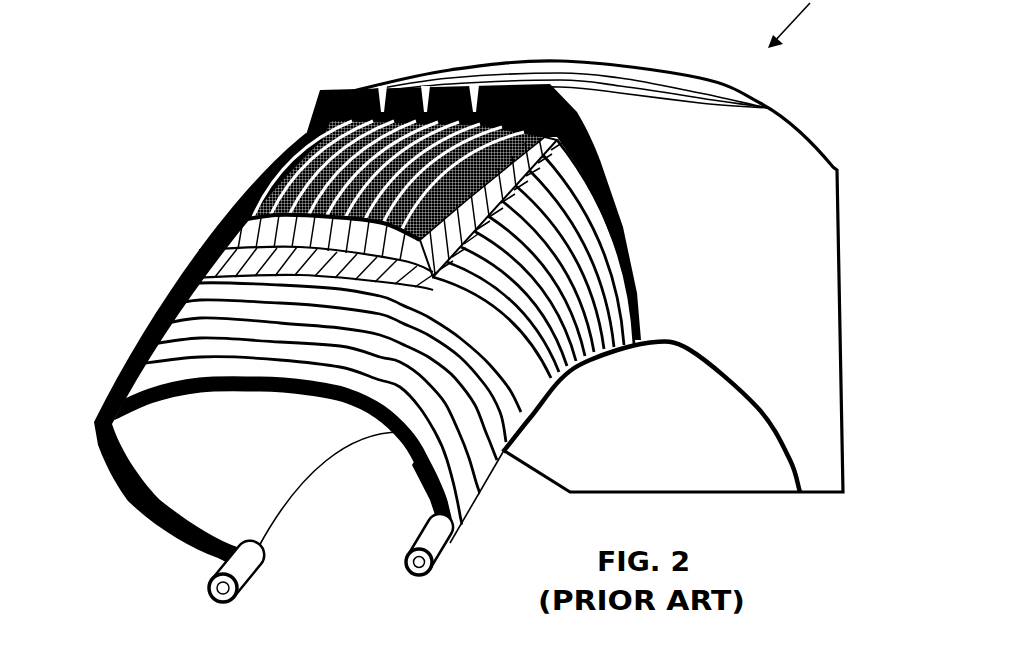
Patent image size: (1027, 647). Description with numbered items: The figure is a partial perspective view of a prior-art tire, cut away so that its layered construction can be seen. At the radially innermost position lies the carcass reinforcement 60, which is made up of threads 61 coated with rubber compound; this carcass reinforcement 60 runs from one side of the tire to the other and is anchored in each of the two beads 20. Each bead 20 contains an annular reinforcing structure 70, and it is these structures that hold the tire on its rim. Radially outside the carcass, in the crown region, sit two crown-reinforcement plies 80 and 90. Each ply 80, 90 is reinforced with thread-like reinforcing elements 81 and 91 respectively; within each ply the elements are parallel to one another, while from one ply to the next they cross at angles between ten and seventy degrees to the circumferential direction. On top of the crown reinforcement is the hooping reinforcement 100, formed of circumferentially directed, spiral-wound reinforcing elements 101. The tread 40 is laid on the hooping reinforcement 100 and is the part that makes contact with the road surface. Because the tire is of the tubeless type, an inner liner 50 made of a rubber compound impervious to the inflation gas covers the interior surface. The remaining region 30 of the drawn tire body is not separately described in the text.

The beads 20 is at (388, 530).
The tire 30 is at (668, 237).
The tread 40 is at (365, 82).
The inner liner 50 is at (238, 458).
The carcass reinforcement 60 is at (63, 274).
The threads 61 is at (173, 310).
The annular reinforcing structures 70 is at (412, 568).
The ply 80 is at (105, 192).
The thread-like reinforcing elements 81 is at (225, 250).
The ply 90 is at (112, 106).
The thread-like reinforcing elements 91 is at (250, 187).
The hooping reinforcement 100 is at (160, 22).
The spiral-wound reinforcing elements 101 is at (290, 150).